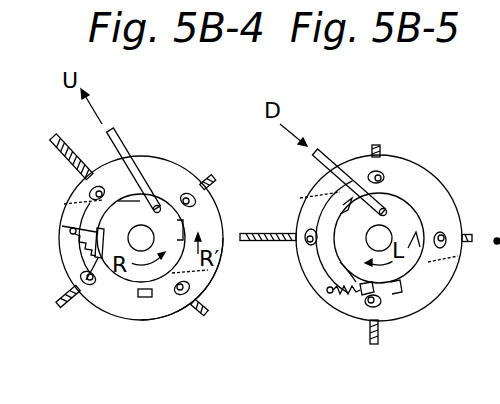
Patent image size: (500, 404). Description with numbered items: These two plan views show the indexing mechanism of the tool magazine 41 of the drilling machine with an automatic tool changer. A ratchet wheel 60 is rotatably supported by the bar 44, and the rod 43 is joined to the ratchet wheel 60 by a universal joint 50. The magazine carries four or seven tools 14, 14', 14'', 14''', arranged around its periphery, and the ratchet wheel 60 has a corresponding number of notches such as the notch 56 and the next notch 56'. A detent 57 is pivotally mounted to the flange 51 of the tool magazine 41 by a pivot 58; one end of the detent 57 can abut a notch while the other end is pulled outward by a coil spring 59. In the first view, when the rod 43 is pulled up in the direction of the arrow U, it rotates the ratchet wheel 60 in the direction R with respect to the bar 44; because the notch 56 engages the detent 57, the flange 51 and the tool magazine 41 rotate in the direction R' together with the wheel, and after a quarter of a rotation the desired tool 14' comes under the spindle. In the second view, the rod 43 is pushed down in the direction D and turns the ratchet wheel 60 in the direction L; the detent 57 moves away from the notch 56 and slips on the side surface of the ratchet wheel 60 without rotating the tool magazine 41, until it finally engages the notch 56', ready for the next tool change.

In FIG. 5B-4, the tool 14 is at (224, 186).
In FIG. 5B-5, the tool 14 is at (394, 137).
In FIG. 5B-4, the tool 14' is at (214, 323).
In FIG. 5B-5, the tool 14' is at (476, 260).
In FIG. 5B-4, the tool 14'' is at (64, 316).
In FIG. 5B-5, the tool 14'' is at (396, 345).
In FIG. 5B-4, the tool 14''' is at (78, 147).
In FIG. 5B-5, the tool 14''' is at (268, 258).
In FIG. 5B-4, the tool magazine 41 is at (141, 205).
In FIG. 5B-5, the tool magazine 41 is at (379, 213).
In FIG. 5B-4, the rod 43 is at (150, 143).
In FIG. 5B-5, the rod 43 is at (325, 154).
In FIG. 5B-4, the bar 44 is at (152, 236).
In FIG. 5B-5, the bar 44 is at (391, 234).
In FIG. 5B-4, the universal joint 50 is at (163, 194).
In FIG. 5B-4, the flange 51 is at (167, 305).
In FIG. 5B-4, the notch 56 is at (61, 237).
In FIG. 5B-5, the notch 56 is at (311, 233).
In FIG. 5B-4, the notch 56' is at (150, 321).
In FIG. 5B-5, the notch 56' is at (419, 314).
In FIG. 5B-4, the detent 57 is at (110, 264).
In FIG. 5B-5, the detent 57 is at (343, 263).
In FIG. 5B-4, the pivot 58 is at (94, 262).
In FIG. 5B-5, the pivot 58 is at (363, 296).
In FIG. 5B-4, the coil spring 59 is at (74, 241).
In FIG. 5B-5, the coil spring 59 is at (340, 293).
In FIG. 5B-4, the ratchet wheel 60 is at (106, 200).
In FIG. 5B-5, the ratchet wheel 60 is at (407, 227).